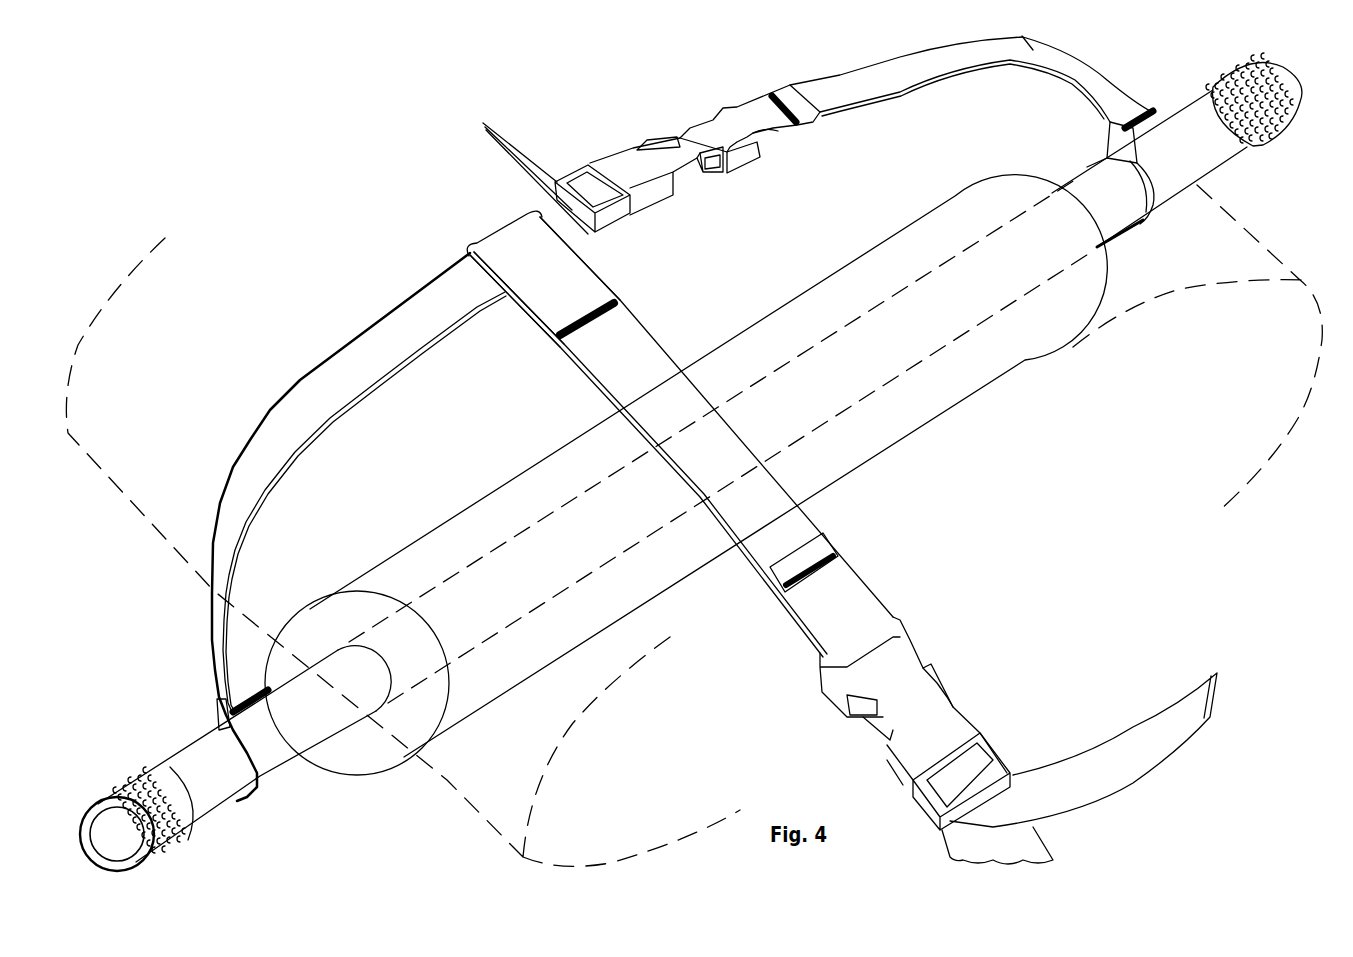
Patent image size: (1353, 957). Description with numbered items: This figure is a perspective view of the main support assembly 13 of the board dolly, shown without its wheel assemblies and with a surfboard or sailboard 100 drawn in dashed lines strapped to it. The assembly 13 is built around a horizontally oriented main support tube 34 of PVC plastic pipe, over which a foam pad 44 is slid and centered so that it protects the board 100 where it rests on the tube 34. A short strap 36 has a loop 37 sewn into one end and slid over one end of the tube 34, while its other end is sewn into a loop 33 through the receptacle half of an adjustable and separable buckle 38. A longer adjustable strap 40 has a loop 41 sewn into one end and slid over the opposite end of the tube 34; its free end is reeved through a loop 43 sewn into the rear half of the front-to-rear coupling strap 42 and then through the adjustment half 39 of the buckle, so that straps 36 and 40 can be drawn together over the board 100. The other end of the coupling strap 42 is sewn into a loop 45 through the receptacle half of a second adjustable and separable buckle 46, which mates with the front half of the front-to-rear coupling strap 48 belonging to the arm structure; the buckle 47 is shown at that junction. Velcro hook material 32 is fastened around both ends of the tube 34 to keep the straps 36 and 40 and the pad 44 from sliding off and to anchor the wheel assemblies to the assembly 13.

The main support assembly 13 is at (1185, 558).
The surfboard or sailboard 100 is at (173, 477).
The Velcro hook material 32 is at (172, 845).
The sewn loop 33 is at (840, 128).
The main support tube 34 is at (323, 723).
The strap 36 is at (943, 70).
The loop 37 is at (1107, 157).
The adjustable and separable buckle 38 is at (703, 130).
The adjustment half of the buckle 39 is at (550, 180).
The adjustable strap 40 is at (377, 363).
The loop 41 is at (215, 730).
The rear half of the front-to-rear coupling strap 42 is at (650, 370).
The loop 43 is at (547, 332).
The foam pad 44 is at (983, 373).
The sewn loop 45 is at (797, 630).
The adjustable and separable buckle 46 is at (900, 657).
The slide buckle 47 is at (1013, 770).
The front half of the front-to-rear coupling strap 48 is at (1030, 847).